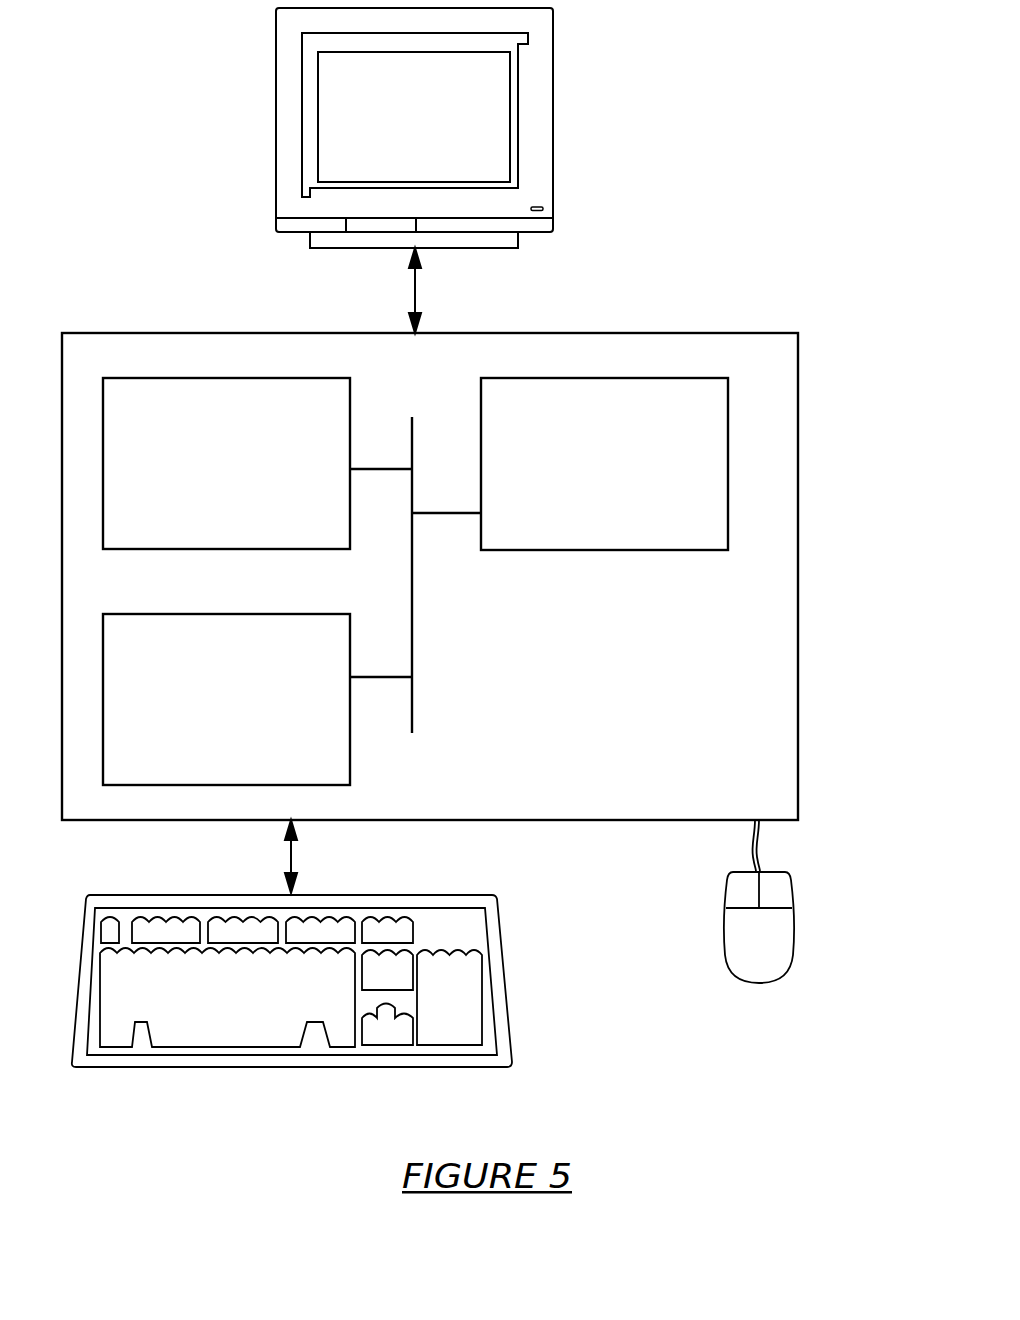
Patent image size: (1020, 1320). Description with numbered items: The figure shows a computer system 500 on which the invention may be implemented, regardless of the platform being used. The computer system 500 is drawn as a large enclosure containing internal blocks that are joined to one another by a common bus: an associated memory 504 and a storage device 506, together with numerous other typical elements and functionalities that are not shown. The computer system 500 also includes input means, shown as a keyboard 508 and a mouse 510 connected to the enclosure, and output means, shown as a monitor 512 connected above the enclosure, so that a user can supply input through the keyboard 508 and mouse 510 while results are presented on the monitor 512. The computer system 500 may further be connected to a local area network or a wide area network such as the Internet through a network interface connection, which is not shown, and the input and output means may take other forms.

The computer system 500 is at (820, 177).
The memory 504 is at (226, 463).
The storage device 506 is at (415, 581).
The keyboard 508 is at (292, 981).
The mouse 510 is at (759, 901).
The monitor 512 is at (414, 128).